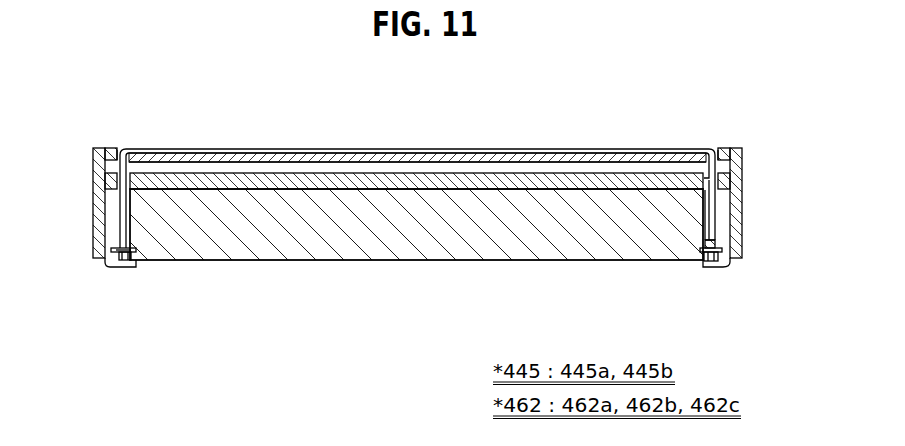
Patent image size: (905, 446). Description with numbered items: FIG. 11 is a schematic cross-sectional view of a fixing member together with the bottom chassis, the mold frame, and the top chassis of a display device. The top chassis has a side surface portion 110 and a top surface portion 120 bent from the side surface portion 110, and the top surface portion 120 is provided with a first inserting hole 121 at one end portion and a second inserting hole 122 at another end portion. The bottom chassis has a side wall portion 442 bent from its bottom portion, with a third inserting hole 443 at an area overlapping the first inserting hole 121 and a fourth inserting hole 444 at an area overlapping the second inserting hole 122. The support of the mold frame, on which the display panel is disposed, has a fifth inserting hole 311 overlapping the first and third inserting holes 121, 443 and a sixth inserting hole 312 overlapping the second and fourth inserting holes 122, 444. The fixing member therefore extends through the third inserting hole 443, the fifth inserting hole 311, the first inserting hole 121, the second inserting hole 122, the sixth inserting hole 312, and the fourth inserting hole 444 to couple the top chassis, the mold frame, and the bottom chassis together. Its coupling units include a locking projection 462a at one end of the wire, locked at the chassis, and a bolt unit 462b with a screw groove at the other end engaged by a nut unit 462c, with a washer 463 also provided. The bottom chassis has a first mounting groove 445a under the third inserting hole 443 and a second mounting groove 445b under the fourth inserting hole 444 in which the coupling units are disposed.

The side surface portion 110 is at (741, 196).
The top surface portion 120 is at (664, 150).
The first inserting hole 121 is at (120, 150).
The second inserting hole 122 is at (716, 150).
The fifth inserting hole 311 is at (133, 151).
The sixth inserting hole 312 is at (709, 176).
The side wall portion 442 is at (414, 238).
The third inserting hole 443 is at (121, 215).
The fourth inserting hole 444 is at (713, 222).
The first mounting groove 445a is at (100, 263).
The second mounting groove 445b is at (724, 264).
The locking projection 462a is at (120, 259).
The bolt unit 462b is at (704, 251).
The nut unit 462c is at (711, 262).
The washer 463 is at (131, 255).